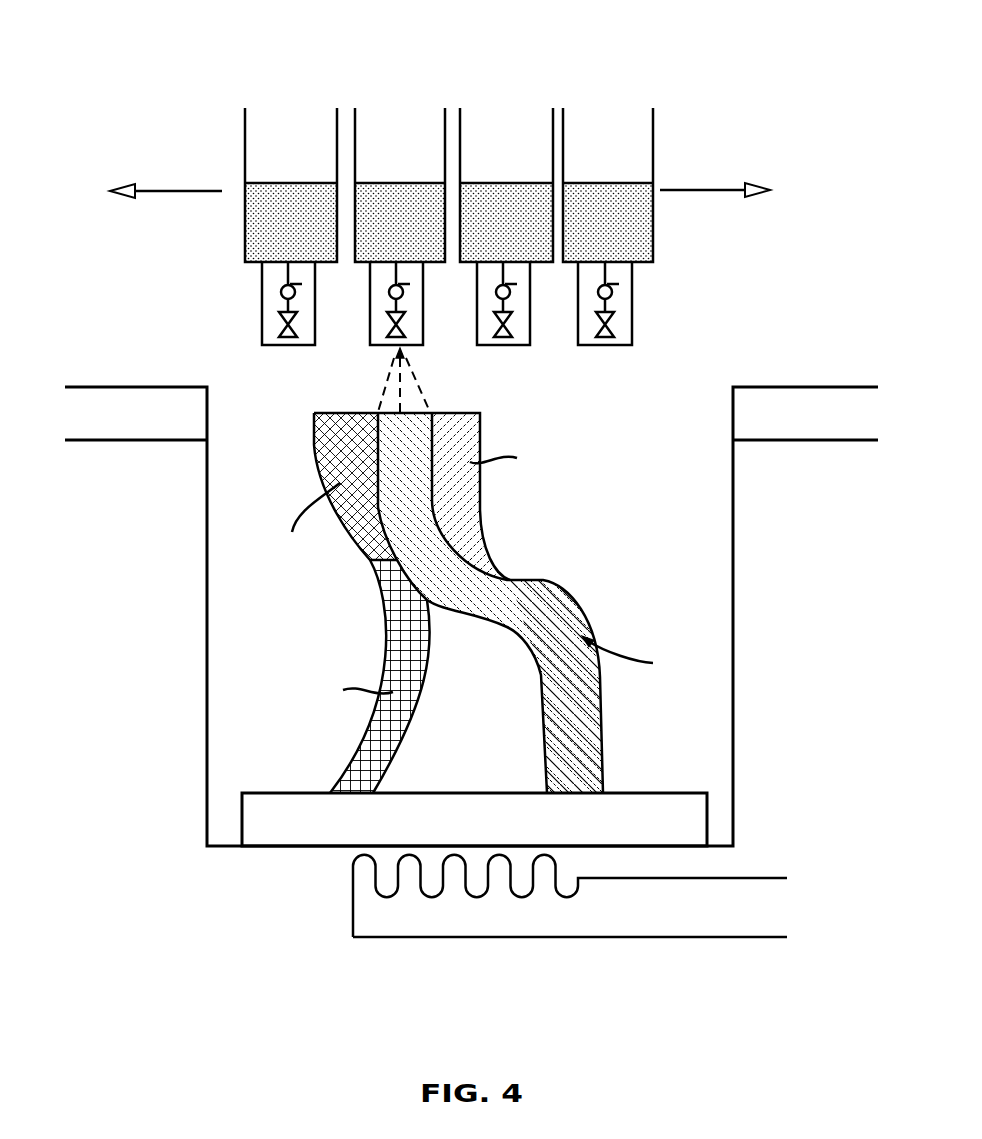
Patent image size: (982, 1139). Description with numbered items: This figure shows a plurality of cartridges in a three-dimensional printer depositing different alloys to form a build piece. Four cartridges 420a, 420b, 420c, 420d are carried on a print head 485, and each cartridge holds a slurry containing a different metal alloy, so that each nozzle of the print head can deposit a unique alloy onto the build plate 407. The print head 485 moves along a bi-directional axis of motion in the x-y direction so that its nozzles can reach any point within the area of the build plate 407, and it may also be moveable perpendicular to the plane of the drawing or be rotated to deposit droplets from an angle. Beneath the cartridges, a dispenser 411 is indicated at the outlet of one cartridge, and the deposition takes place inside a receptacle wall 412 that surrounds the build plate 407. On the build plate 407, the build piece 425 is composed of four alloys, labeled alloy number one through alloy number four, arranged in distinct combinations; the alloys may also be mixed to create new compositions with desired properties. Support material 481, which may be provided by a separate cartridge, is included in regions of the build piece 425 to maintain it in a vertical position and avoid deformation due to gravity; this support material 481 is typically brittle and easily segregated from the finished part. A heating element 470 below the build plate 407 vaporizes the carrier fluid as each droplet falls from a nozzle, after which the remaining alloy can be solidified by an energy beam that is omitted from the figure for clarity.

The print head 485 is at (238, 67).
The cartridge 420a is at (320, 234).
The cartridge 420b is at (429, 234).
The cartridge 420c is at (535, 234).
The cartridge 420d is at (637, 234).
The dispenser 411 is at (642, 285).
The receptacle wall 412 is at (873, 537).
The build piece 425 is at (460, 582).
The support material 481 is at (490, 603).
The build plate 407 is at (570, 832).
The heating element 470 is at (338, 882).